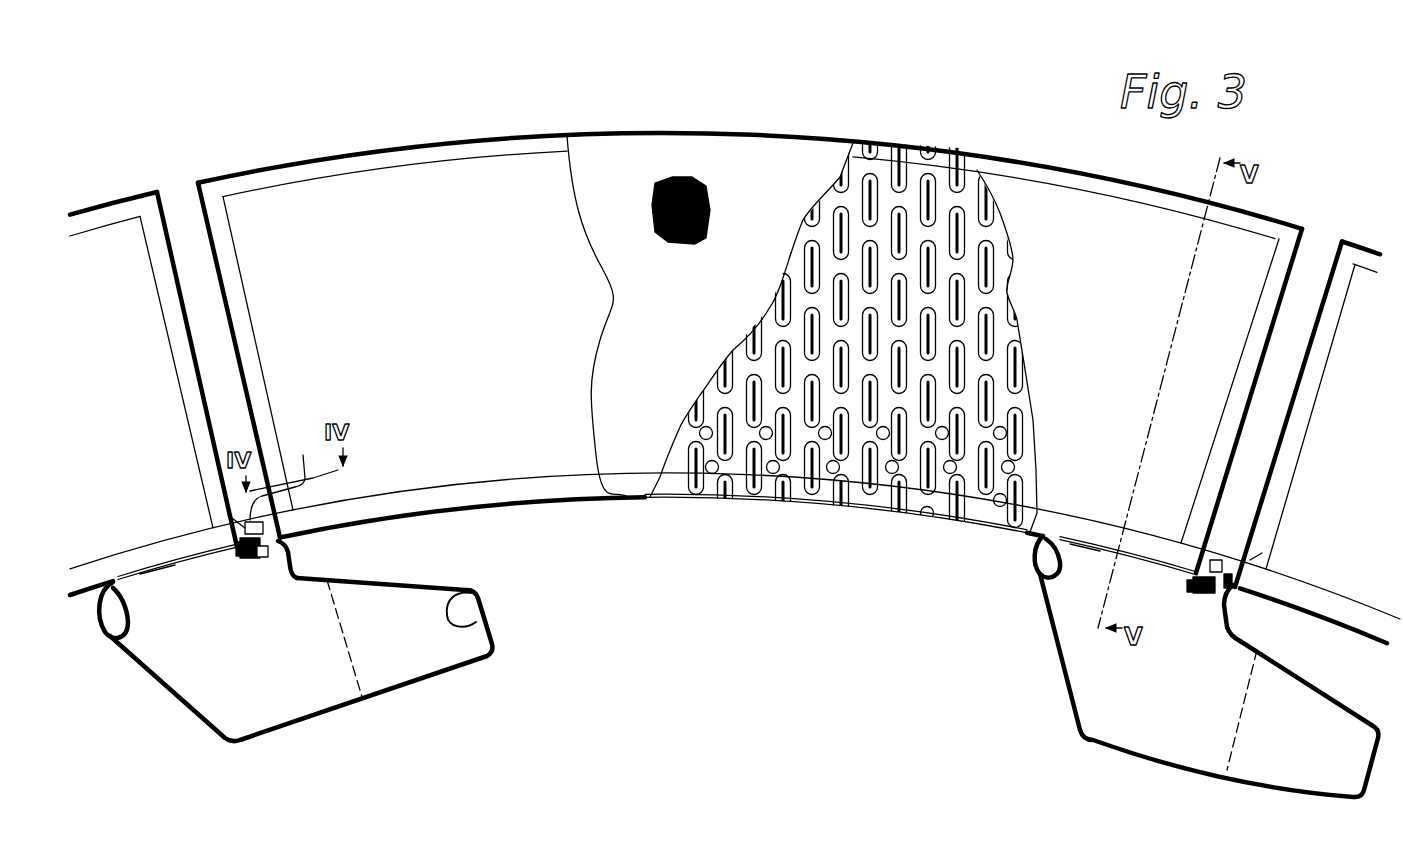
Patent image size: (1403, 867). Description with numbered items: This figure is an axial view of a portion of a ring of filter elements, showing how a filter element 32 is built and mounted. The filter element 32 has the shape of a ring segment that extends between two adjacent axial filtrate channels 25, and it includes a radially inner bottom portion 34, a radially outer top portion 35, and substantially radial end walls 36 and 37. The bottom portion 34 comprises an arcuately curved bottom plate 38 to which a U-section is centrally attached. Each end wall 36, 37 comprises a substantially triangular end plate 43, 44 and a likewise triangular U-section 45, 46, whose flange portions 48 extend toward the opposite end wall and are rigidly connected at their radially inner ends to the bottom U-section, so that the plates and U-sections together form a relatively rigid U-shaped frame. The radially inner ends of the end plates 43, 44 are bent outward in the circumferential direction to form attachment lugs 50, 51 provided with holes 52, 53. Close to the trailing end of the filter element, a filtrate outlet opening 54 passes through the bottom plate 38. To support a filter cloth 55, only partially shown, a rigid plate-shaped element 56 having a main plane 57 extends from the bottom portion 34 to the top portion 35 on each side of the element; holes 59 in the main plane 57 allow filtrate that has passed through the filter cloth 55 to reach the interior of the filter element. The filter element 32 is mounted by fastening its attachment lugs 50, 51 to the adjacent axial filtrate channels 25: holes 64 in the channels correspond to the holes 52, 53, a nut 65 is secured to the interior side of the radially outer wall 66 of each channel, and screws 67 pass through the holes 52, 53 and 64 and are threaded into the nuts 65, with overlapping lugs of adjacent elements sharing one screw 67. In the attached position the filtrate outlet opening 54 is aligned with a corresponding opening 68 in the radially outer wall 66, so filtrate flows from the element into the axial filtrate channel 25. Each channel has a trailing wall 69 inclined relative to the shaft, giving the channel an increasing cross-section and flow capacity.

The axial filtrate channel 25 is at (170, 688).
The filter element 32 is at (315, 214).
The bottom portion 34 is at (614, 500).
The top portion 35 is at (380, 140).
The end wall 36 is at (202, 245).
The end wall 37 is at (1302, 268).
The bottom plate 38 is at (793, 503).
The end plate 43 is at (232, 347).
The end plate 44 is at (1247, 421).
The U-section 45 is at (255, 345).
The U-section 46 is at (1226, 419).
The flange portion 48 is at (262, 400).
The attachment lug 50 is at (283, 474).
The attachment lug 51 is at (232, 540).
The hole 52 is at (263, 567).
The hole 53 is at (1213, 597).
The filtrate outlet opening 54 is at (168, 560).
The filter cloth 55 is at (744, 266).
The plate-shaped element 56 is at (910, 197).
The main plane 57 is at (760, 370).
The holes 59 is at (891, 476).
The hole 64 is at (260, 560).
The nut 65 is at (290, 558).
The radially outer wall 66 is at (120, 637).
The screw 67 is at (258, 526).
The opening 68 is at (157, 580).
The trailing wall 69 is at (457, 583).